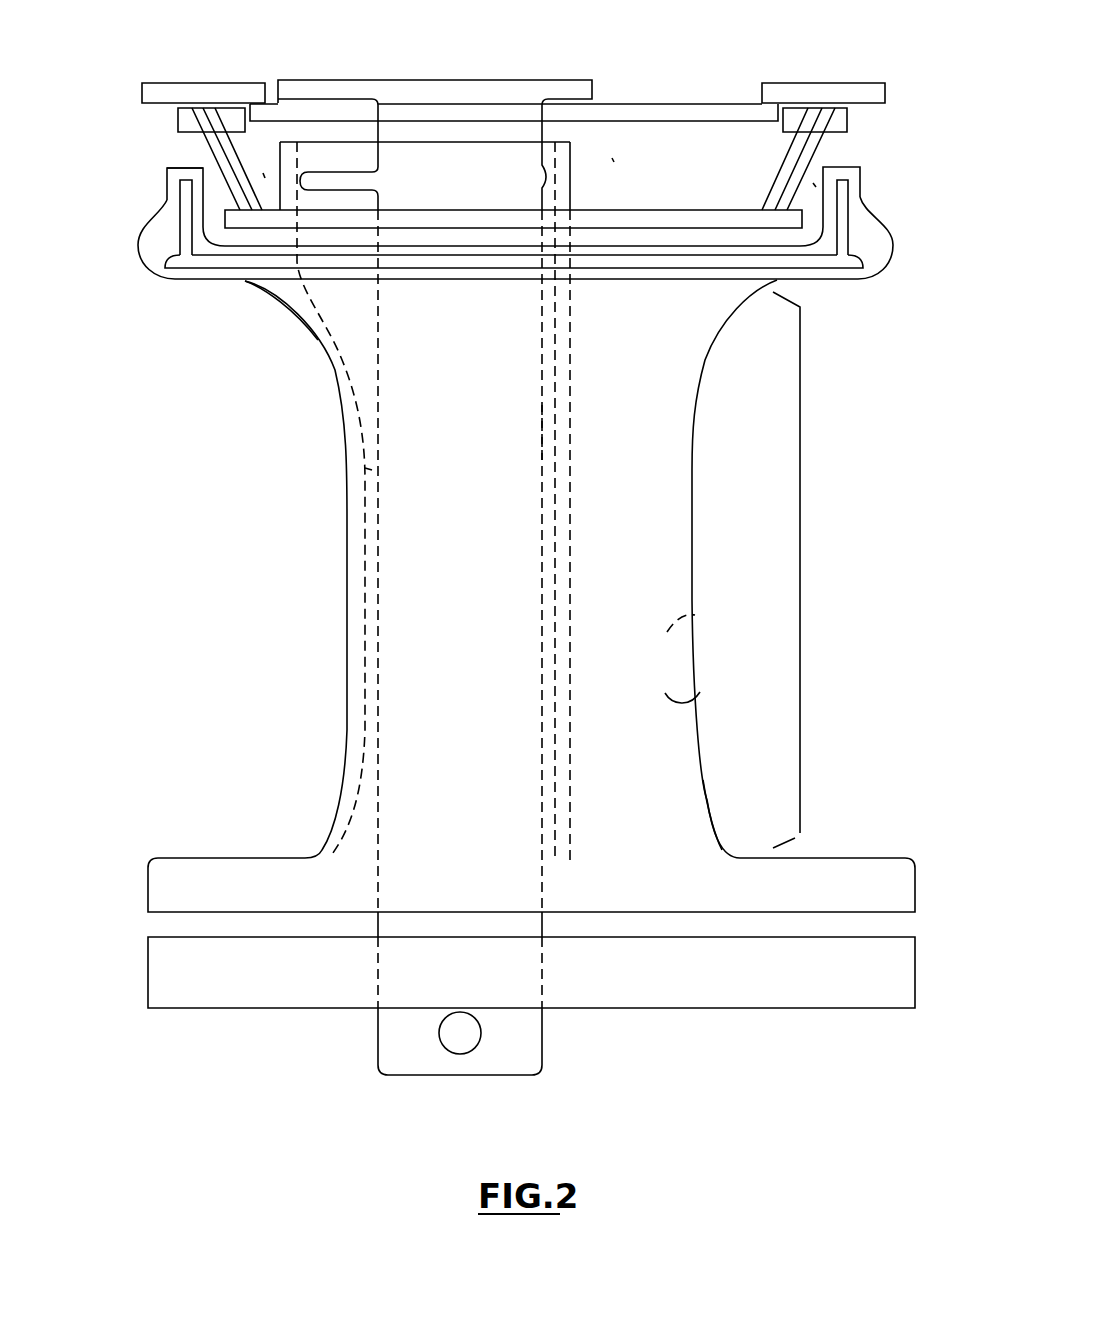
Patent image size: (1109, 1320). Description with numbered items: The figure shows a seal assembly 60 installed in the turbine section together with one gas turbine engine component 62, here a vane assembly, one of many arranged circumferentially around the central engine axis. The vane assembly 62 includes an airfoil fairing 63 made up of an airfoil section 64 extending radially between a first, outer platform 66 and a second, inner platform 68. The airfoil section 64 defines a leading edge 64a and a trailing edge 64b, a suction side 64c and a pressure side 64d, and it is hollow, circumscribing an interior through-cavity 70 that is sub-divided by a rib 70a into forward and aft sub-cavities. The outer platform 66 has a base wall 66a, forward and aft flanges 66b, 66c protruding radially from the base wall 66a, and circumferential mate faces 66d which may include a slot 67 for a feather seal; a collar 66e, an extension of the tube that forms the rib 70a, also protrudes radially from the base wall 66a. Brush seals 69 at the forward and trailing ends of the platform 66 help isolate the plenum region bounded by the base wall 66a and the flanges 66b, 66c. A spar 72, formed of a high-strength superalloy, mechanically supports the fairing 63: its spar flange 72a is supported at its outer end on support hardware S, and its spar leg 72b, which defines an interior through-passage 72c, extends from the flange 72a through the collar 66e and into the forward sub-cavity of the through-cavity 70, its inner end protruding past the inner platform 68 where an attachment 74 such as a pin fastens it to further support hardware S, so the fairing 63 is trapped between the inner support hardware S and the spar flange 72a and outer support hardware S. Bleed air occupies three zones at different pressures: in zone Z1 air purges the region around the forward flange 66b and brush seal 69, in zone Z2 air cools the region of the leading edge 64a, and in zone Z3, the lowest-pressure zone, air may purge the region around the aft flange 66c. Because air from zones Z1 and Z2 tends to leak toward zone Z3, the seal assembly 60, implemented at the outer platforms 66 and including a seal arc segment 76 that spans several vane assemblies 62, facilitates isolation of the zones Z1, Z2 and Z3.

The support hardware S is at (220, 96).
The seal assembly 60 is at (670, 192).
The gas turbine engine component 62 is at (556, 500).
The airfoil fairing 63 is at (712, 814).
The airfoil section 64 is at (800, 572).
The leading edge 64a is at (346, 498).
The trailing edge 64b is at (692, 442).
The suction side 64c is at (700, 692).
The pressure side 64d is at (695, 622).
The first platform 66 is at (527, 250).
The base wall 66a is at (245, 283).
The forward flange 66b is at (167, 170).
The aft flange 66c is at (862, 172).
The mate face 66d is at (870, 240).
The collar 66e is at (572, 165).
The slot 67 is at (215, 263).
The second platform 68 is at (903, 858).
The brush seal 69 is at (176, 120).
The through-cavity 70 is at (371, 628).
The rib 70a is at (565, 512).
The spar 72 is at (558, 77).
The spar flange 72a is at (320, 92).
The spar leg 72b is at (545, 357).
The through-passage 72c is at (534, 443).
The attachment 74 is at (484, 1052).
The seal arc segment 76 is at (690, 206).
The zone Z1 is at (186, 152).
The zone Z2 is at (263, 173).
The zone Z3 is at (815, 185).